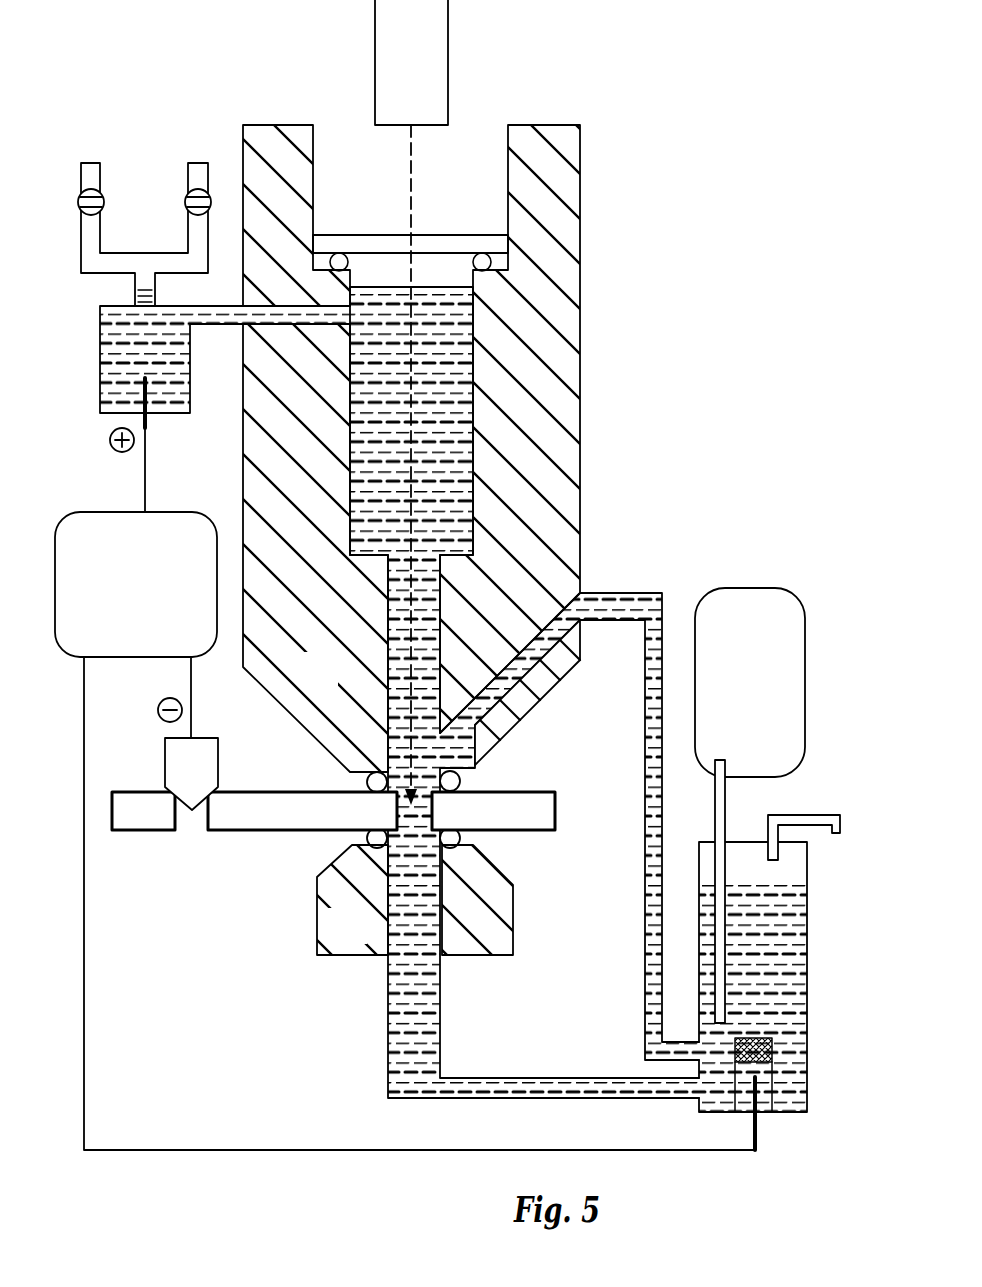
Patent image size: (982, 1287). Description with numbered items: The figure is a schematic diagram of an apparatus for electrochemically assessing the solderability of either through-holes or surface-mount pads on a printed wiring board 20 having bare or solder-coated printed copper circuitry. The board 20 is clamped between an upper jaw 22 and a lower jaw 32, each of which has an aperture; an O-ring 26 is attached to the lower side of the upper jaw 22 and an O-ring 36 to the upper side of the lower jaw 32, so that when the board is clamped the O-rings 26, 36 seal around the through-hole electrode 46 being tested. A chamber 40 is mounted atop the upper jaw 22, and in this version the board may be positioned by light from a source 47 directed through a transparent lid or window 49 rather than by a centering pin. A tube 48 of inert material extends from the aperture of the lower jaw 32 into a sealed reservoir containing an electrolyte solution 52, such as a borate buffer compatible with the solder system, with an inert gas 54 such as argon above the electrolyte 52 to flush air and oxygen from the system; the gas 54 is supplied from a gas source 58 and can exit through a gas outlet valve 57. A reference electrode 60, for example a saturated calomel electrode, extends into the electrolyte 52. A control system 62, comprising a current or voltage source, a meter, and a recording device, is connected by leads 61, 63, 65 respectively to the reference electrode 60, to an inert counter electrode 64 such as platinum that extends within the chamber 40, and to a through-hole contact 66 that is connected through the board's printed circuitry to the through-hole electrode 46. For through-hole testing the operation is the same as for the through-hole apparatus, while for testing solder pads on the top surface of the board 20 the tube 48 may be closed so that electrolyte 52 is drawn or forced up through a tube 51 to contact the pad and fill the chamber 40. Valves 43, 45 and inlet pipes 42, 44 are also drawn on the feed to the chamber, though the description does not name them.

The printed wiring board 20 is at (128, 829).
The upper jaw 22 is at (303, 685).
The O-ring 26 is at (462, 780).
The lower jaw 32 is at (332, 940).
The O-ring 36 is at (462, 840).
The chamber 40 is at (475, 497).
The inlet pipe 42 is at (81, 175).
The valve 43 is at (79, 208).
The inlet pipe 44 is at (188, 175).
The valve 45 is at (185, 208).
The through-hole electrode 46 is at (367, 783).
The light source 47 is at (437, 235).
The tube 48 is at (558, 1078).
The transparent lid or window 49 is at (396, 70).
The tube 51 is at (645, 940).
The electrolyte solution 52 is at (777, 968).
The inert gas 54 is at (777, 870).
The gas outlet valve 57 is at (803, 815).
The gas source 58 is at (735, 700).
The reference electrode 60 is at (758, 1118).
The lead 61 is at (84, 878).
The control system 62 is at (122, 600).
The lead 63 is at (147, 503).
The inert counter electrode 64 is at (150, 422).
The lead 65 is at (197, 712).
The through-hole contact 66 is at (177, 785).